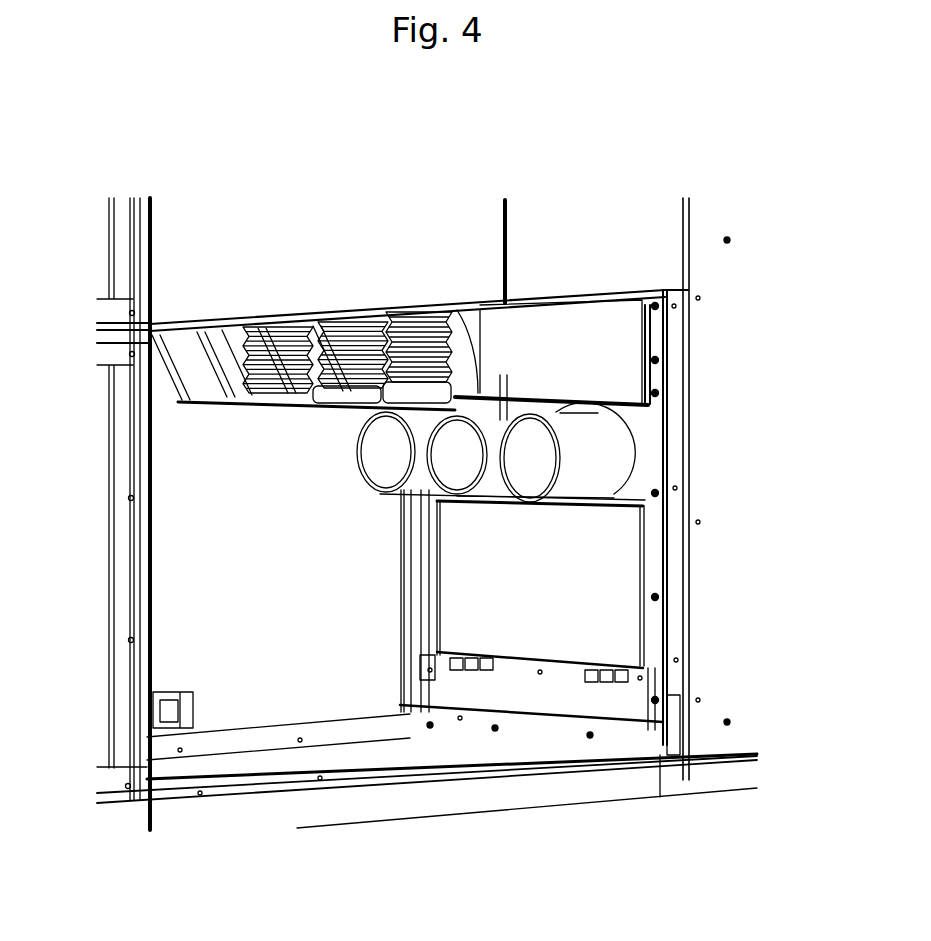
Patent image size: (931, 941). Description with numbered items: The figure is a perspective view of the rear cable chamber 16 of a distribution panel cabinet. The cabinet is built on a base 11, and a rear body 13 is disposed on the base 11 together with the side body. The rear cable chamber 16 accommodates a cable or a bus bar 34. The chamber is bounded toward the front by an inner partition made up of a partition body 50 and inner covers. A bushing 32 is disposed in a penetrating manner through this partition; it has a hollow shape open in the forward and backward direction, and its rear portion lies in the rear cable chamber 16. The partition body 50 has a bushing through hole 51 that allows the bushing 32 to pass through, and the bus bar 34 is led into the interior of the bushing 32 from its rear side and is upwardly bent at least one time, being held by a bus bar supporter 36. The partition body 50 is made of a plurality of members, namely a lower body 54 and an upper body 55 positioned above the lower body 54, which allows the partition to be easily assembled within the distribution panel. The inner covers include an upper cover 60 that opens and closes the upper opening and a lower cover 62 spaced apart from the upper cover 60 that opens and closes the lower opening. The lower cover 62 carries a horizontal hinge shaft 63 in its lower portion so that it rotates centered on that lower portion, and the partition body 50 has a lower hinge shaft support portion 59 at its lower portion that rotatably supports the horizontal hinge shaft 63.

The base 11 is at (364, 754).
The rear body 13 is at (135, 592).
The rear cable chamber 16 is at (250, 674).
The bushing 32 is at (477, 330).
The bus bar 34 is at (508, 330).
The bus bar supporter 36 is at (373, 312).
The partition body 50 is at (798, 368).
The bushing through hole 51 is at (566, 392).
The lower body 54 is at (657, 428).
The upper body 55 is at (657, 336).
The lower hinge shaft support portion 59 is at (618, 673).
The upper cover 60 is at (620, 328).
The lower cover 62 is at (615, 566).
The horizontal hinge shaft 63 is at (598, 684).